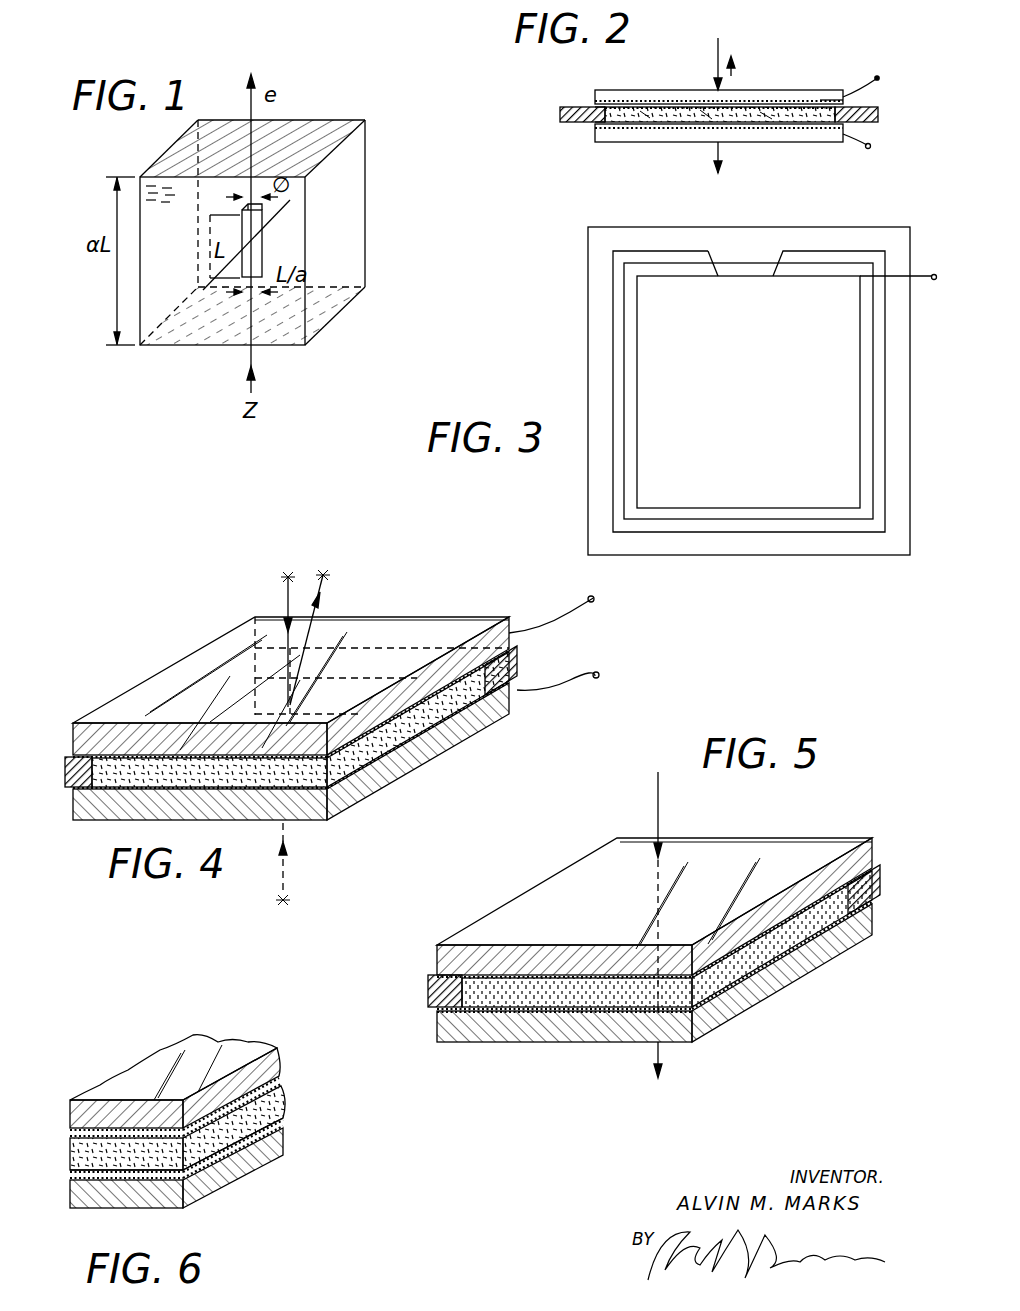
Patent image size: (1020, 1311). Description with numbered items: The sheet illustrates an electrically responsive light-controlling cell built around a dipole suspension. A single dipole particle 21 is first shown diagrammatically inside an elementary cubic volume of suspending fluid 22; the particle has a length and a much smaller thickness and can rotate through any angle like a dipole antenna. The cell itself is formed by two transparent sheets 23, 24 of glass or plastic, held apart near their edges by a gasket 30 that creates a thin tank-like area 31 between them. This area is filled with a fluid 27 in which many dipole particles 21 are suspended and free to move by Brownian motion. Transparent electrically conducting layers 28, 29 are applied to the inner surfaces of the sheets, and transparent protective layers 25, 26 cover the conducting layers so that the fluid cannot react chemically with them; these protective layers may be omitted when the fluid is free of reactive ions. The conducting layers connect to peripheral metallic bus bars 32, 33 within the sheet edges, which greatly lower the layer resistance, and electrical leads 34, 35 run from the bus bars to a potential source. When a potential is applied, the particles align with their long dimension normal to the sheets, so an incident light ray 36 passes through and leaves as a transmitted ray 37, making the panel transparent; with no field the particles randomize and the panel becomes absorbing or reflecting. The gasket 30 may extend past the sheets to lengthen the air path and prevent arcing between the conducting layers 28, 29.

In FIG. 1, the dipole particle 21 is at (263, 240).
In FIG. 2, the dipole particle 21 is at (710, 122).
In FIG. 6, the dipole particle 21 is at (82, 1152).
In FIG. 1, the suspending fluid 22 is at (158, 188).
In FIG. 2, the transparent sheet 23 is at (785, 96).
In FIG. 4, the transparent sheet 23 is at (73, 730).
In FIG. 5, the transparent sheet 23 is at (437, 960).
In FIG. 6, the transparent sheet 23 is at (72, 1100).
In FIG. 2, the transparent sheet 24 is at (805, 138).
In FIG. 3, the transparent sheet 24 is at (878, 368).
In FIG. 4, the transparent sheet 24 is at (73, 812).
In FIG. 5, the transparent sheet 24 is at (437, 1033).
In FIG. 6, the transparent sheet 24 is at (128, 1200).
In FIG. 2, the transparent protective layer 25 is at (598, 108).
In FIG. 6, the transparent protective layer 25 is at (283, 1086).
In FIG. 2, the transparent protective layer 26 is at (600, 120).
In FIG. 6, the transparent protective layer 26 is at (284, 1116).
In FIG. 2, the fluid 27 is at (646, 105).
In FIG. 3, the fluid 27 is at (835, 285).
In FIG. 5, the fluid 27 is at (745, 980).
In FIG. 6, the fluid 27 is at (148, 1182).
In FIG. 2, the transparent electrically conducting layer 28 is at (752, 100).
In FIG. 4, the transparent electrically conducting layer 28 is at (368, 727).
In FIG. 5, the transparent electrically conducting layer 28 is at (723, 950).
In FIG. 6, the transparent electrically conducting layer 28 is at (273, 1074).
In FIG. 2, the transparent electrically conducting layer 29 is at (770, 129).
In FIG. 4, the transparent electrically conducting layer 29 is at (398, 748).
In FIG. 5, the transparent electrically conducting layer 29 is at (780, 976).
In FIG. 6, the transparent electrically conducting layer 29 is at (284, 1124).
In FIG. 2, the gasket 30 is at (560, 114).
In FIG. 3, the gasket 30 is at (852, 443).
In FIG. 4, the gasket 30 is at (66, 787).
In FIG. 5, the gasket 30 is at (428, 994).
In FIG. 2, the tank-like area 31 is at (680, 110).
In FIG. 3, the tank-like area 31 is at (742, 398).
In FIG. 4, the tank-like area 31 is at (186, 782).
In FIG. 5, the tank-like area 31 is at (500, 1012).
In FIG. 6, the tank-like area 31 is at (78, 1160).
In FIG. 2, the bus bar 32 is at (821, 98).
In FIG. 2, the bus bar 33 is at (823, 128).
In FIG. 3, the bus bar 33 is at (873, 400).
In FIG. 2, the electrical lead 34 is at (874, 70).
In FIG. 4, the electrical lead 34 is at (551, 618).
In FIG. 2, the electrical lead 35 is at (877, 147).
In FIG. 3, the electrical lead 35 is at (901, 261).
In FIG. 4, the electrical lead 35 is at (542, 670).
In FIG. 2, the light ray 36 is at (720, 48).
In FIG. 4, the light ray 36 is at (286, 588).
In FIG. 5, the light ray 36 is at (656, 806).
In FIG. 2, the transmitted ray 37 is at (716, 160).
In FIG. 5, the transmitted ray 37 is at (656, 1060).